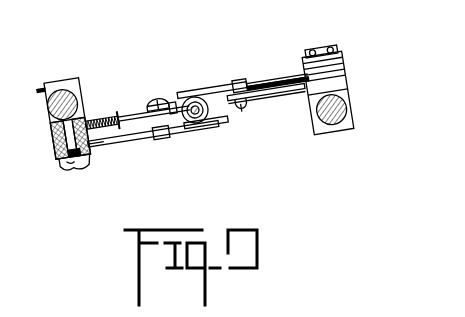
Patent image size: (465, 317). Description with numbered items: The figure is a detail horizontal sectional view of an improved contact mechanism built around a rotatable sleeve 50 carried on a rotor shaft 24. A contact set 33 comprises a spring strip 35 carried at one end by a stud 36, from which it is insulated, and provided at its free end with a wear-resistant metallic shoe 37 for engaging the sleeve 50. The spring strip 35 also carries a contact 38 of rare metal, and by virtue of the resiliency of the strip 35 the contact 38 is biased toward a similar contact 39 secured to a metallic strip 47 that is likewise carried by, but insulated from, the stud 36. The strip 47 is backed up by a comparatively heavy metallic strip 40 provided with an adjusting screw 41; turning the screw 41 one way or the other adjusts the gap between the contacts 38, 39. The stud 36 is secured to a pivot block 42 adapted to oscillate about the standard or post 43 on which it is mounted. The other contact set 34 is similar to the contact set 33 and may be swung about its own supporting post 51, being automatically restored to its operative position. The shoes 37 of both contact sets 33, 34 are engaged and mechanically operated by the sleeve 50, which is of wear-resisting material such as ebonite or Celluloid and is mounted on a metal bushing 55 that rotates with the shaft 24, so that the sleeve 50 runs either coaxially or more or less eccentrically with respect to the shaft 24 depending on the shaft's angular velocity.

The rotor shaft 24 is at (203, 95).
The contact set 33 is at (68, 167).
The contact set 34 is at (326, 50).
The spring strip 35 is at (100, 145).
The stud 36 is at (87, 117).
The wear-resistant metallic shoe 37 is at (196, 124).
The contact 38 is at (162, 136).
The contact 39 is at (151, 137).
The metallic strip 40 is at (119, 117).
The adjusting screw 41 is at (162, 98).
The pivot block 42 is at (68, 83).
The standard or post 43 is at (50, 112).
The metallic strip 47 is at (175, 104).
The rotatable sleeve 50 is at (217, 96).
The supporting post 51 is at (330, 118).
The metal bushing 55 is at (209, 116).